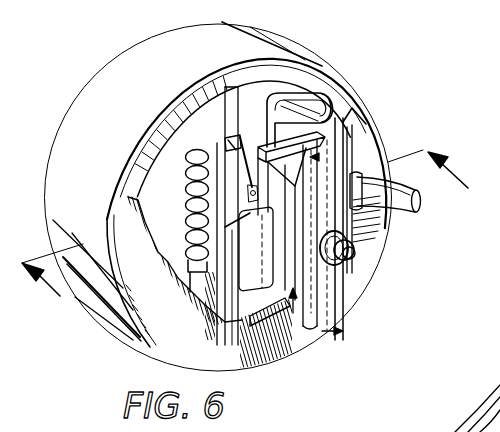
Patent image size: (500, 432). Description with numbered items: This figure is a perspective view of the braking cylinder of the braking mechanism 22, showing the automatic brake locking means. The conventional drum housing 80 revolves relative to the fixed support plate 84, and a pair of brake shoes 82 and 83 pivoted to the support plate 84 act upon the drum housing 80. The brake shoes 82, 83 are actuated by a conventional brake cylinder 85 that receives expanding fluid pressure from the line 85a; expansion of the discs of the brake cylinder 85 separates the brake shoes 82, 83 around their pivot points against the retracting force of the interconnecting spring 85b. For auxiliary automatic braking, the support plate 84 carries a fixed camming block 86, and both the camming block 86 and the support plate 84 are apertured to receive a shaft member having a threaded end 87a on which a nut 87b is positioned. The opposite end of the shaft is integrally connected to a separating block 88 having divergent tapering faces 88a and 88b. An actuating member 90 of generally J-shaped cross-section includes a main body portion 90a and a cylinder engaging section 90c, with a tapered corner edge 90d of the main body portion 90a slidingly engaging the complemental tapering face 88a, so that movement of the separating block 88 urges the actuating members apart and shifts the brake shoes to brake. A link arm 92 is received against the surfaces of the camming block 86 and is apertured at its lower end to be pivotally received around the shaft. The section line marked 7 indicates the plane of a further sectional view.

The section line 7- 7 is at (248, 233).
The braking mechanism 22 is at (131, 349).
The drum housing 80 is at (315, 64).
The brake shoe 82 is at (277, 77).
The brake shoe 83 is at (246, 315).
The support plate 84 is at (284, 357).
The brake cylinder 85 is at (343, 141).
The line 85a is at (406, 201).
The interconnecting spring 85b is at (230, 226).
The camming block 86 is at (289, 310).
The threaded end 87a is at (352, 253).
The nut 87b is at (350, 270).
The separating block 88 is at (215, 153).
The tapering face 88a is at (238, 182).
The tapering face 88b is at (230, 213).
The actuating member 90 is at (248, 93).
The main body portion 90a is at (248, 100).
The cylinder engaging section 90c is at (324, 102).
The tapered corner edge 90d is at (245, 163).
The link arm 92 is at (308, 317).